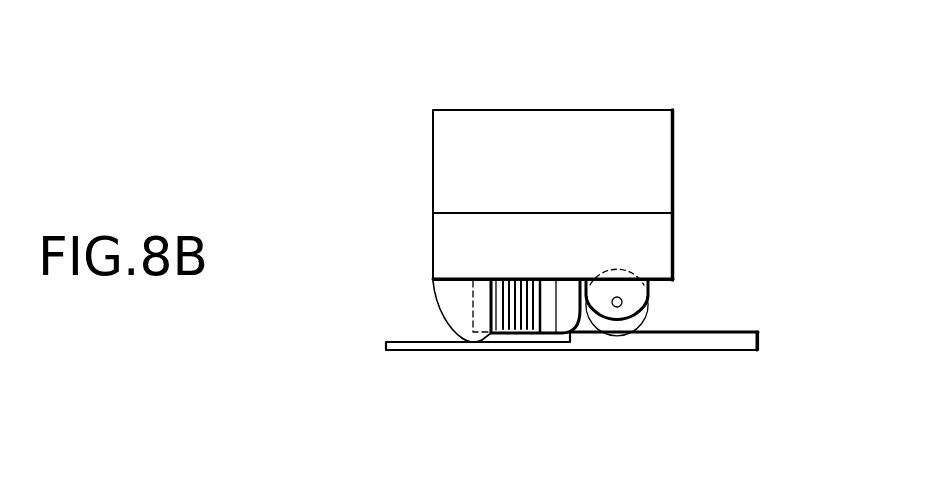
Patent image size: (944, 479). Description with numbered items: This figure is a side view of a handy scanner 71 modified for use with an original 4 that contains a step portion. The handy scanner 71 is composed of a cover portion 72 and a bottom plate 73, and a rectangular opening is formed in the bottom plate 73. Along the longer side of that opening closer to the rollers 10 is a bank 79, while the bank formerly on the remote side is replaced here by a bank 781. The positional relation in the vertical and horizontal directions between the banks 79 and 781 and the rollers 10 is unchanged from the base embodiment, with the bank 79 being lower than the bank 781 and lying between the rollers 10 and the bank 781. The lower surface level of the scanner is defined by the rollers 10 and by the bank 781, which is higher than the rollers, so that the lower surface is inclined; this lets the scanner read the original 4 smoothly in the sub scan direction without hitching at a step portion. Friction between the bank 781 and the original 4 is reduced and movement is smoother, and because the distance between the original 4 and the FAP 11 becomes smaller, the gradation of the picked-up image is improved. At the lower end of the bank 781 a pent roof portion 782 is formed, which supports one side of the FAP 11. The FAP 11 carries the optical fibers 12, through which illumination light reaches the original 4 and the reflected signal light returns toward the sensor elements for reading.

The handy scanner 71 is at (583, 155).
The cover portion 72 is at (652, 152).
The bottom plate 73 is at (652, 240).
The rollers 10 is at (643, 304).
The bank 781 is at (453, 320).
The pent roof portion 782 is at (470, 342).
The bank 79 is at (558, 308).
The optical fibers 12 is at (519, 338).
The FAP 11 is at (498, 340).
The original 4 is at (727, 342).